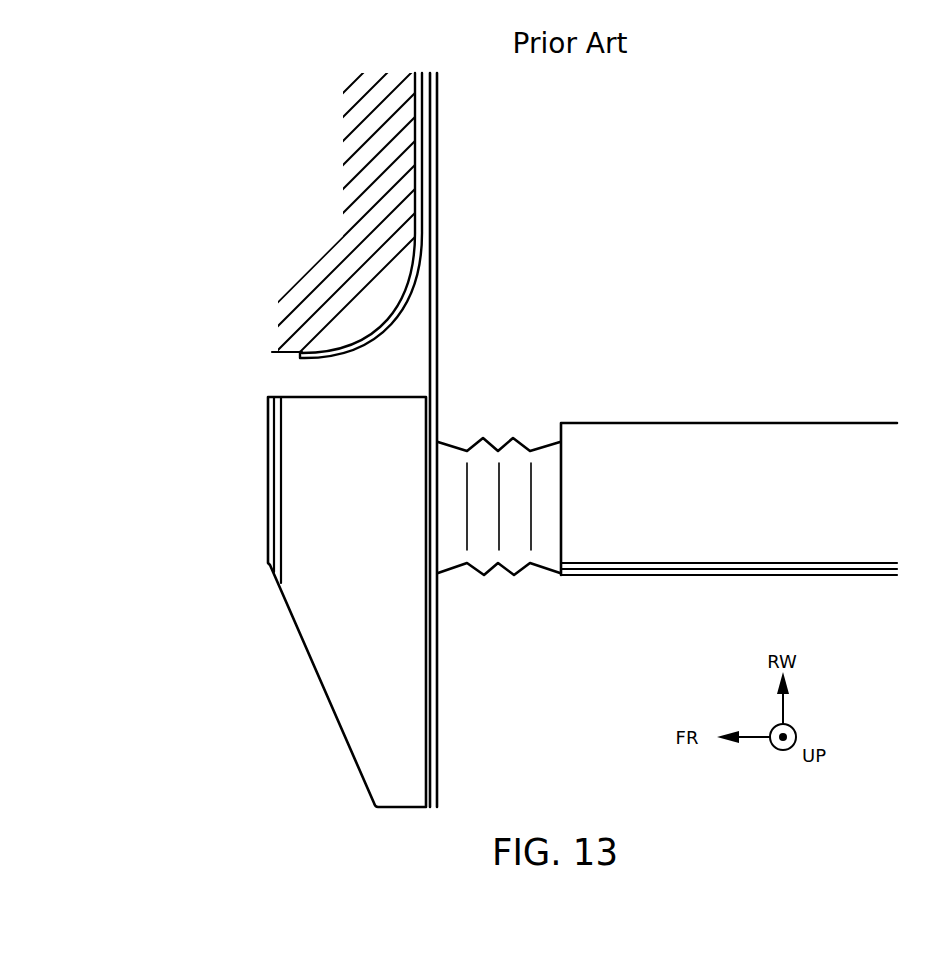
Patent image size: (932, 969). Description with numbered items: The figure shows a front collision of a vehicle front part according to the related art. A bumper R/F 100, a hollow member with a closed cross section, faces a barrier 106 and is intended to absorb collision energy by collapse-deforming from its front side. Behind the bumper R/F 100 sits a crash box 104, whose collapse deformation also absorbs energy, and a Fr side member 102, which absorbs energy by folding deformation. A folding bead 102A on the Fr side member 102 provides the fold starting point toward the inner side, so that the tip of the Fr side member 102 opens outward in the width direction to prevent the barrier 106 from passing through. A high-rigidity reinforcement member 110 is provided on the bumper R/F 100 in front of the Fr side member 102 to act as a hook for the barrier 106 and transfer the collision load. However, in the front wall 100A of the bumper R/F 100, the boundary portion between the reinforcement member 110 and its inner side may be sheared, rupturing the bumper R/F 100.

The bumper R/F 100 is at (440, 347).
The front wall 100A is at (393, 318).
The barrier 106 is at (287, 352).
The reinforcement member 110 is at (395, 396).
The crash box 104 is at (493, 572).
The Fr side member 102 is at (729, 464).
The folding bead 102A is at (728, 563).